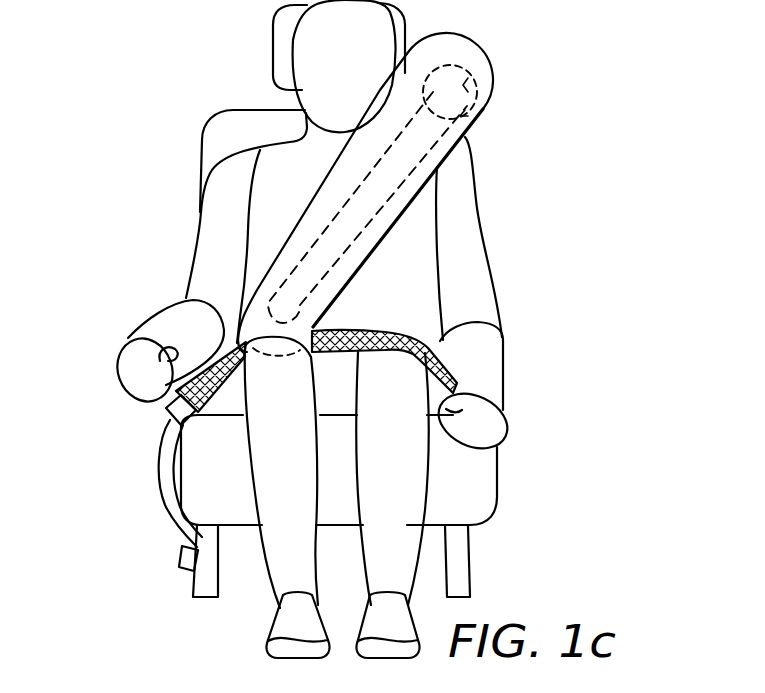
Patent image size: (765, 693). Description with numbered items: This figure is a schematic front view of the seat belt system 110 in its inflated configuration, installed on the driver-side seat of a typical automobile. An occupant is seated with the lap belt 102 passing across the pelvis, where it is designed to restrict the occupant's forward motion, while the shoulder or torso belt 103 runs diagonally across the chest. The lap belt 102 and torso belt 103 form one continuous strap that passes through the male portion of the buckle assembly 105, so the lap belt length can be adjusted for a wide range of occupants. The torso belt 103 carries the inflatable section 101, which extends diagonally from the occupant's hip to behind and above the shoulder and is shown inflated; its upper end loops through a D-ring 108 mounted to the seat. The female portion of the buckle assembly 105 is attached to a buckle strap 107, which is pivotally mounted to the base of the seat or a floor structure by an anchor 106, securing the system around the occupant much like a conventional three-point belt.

The inflatable section 101 is at (293, 228).
The lap belt 102 is at (381, 331).
The torso belt 103 is at (420, 153).
The buckle assembly 105 is at (166, 411).
The anchor 106 is at (178, 556).
The buckle strap 107 is at (153, 462).
The D-ring 108 is at (480, 52).
The seat belt system 110 is at (337, 294).